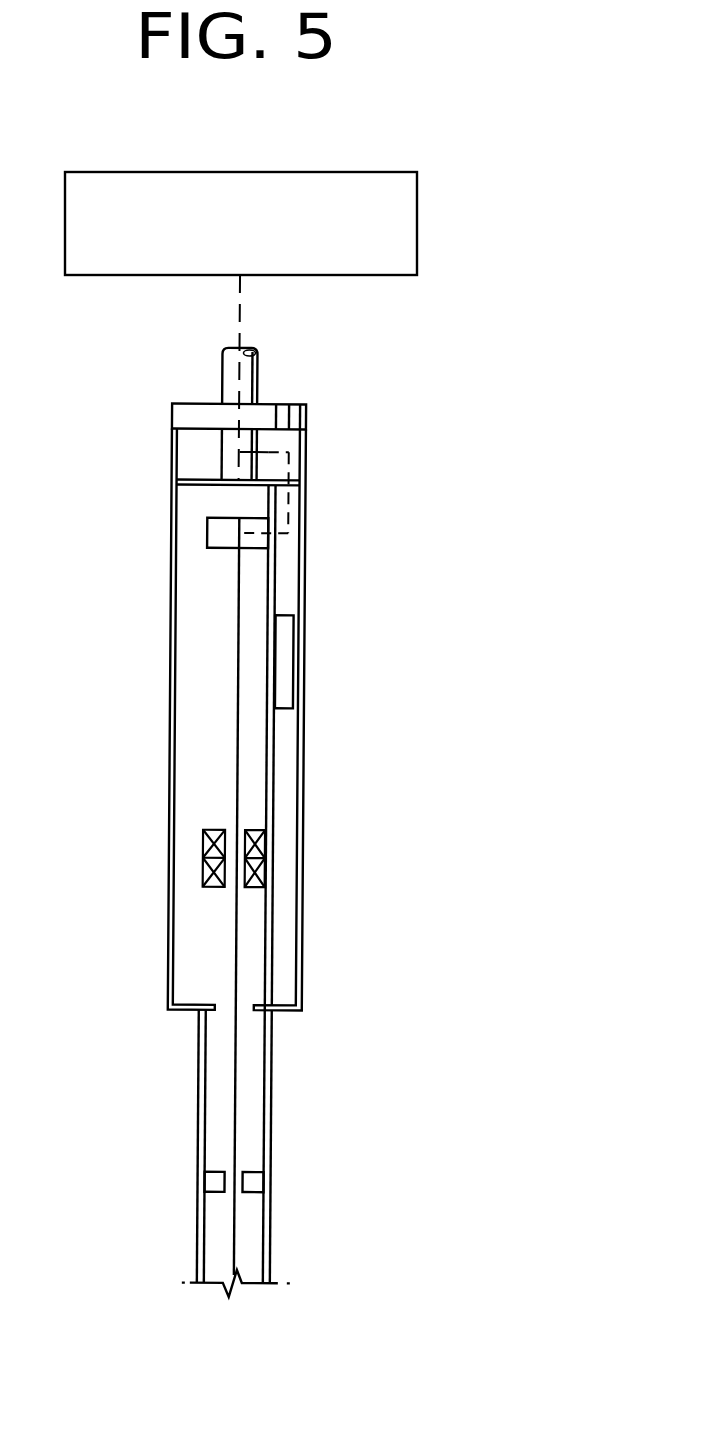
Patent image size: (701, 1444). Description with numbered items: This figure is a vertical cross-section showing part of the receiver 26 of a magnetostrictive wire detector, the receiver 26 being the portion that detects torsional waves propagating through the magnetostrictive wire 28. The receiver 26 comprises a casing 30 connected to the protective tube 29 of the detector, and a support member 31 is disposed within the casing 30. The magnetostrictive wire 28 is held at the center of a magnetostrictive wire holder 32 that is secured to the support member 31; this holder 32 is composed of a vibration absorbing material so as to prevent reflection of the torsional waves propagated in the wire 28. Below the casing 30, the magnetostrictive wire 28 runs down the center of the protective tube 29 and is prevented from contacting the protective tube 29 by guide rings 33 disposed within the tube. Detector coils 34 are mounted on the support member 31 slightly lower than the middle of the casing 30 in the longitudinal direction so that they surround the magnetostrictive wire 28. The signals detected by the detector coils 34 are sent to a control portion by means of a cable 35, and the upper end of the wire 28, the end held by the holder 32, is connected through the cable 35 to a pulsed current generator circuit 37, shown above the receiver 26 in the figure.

The receiver 26 is at (153, 408).
The magnetostrictive wire 28 is at (236, 970).
The protective tube 29 is at (271, 1122).
The casing 30 is at (305, 657).
The support member 31 is at (276, 570).
The magnetostrictive wire holder 32 is at (207, 538).
The guide rings 33 is at (257, 1180).
The detector coils 34 is at (250, 828).
The cable 35 is at (257, 372).
The pulsed current generator circuit 37 is at (408, 245).